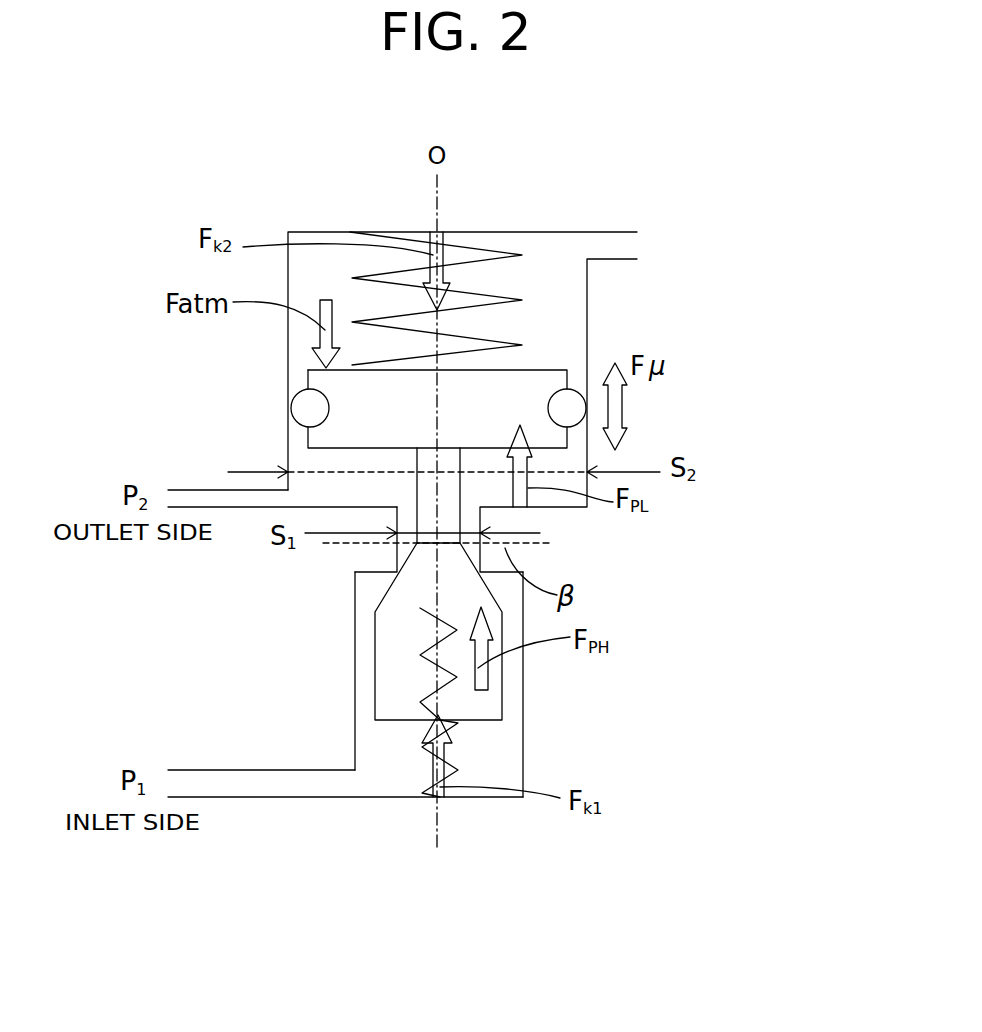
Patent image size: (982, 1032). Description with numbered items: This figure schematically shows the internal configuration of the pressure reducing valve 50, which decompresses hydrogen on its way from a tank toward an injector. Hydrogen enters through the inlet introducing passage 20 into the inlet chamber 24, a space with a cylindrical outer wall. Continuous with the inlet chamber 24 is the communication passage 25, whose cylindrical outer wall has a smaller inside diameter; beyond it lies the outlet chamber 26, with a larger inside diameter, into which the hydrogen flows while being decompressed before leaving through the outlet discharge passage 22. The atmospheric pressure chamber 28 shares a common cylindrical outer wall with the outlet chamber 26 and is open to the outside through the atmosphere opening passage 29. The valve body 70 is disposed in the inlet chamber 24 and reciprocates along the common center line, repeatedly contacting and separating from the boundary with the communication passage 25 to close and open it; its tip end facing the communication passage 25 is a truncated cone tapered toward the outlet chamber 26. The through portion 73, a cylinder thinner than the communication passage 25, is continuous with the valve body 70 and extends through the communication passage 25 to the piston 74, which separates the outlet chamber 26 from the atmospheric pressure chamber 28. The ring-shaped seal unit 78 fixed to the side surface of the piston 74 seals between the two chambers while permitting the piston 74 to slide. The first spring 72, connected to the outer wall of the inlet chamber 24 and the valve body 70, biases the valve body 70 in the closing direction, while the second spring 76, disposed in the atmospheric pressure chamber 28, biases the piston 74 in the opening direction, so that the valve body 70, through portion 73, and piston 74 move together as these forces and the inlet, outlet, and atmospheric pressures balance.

The inlet introducing passage 20 is at (262, 798).
The outlet discharge passage 22 is at (208, 490).
The inlet chamber 24 is at (507, 762).
The communication passage 25 is at (448, 517).
The outlet chamber 26 is at (573, 490).
The atmospheric pressure chamber 28 is at (532, 247).
The atmosphere opening passage 29 is at (592, 230).
The pressure reducing valve 50 is at (733, 209).
The valve body 70 is at (387, 635).
The first spring 72 is at (427, 667).
The through portion 73 is at (425, 482).
The piston 74 is at (525, 382).
The second spring 76 is at (522, 300).
The seal unit 78 is at (573, 403).